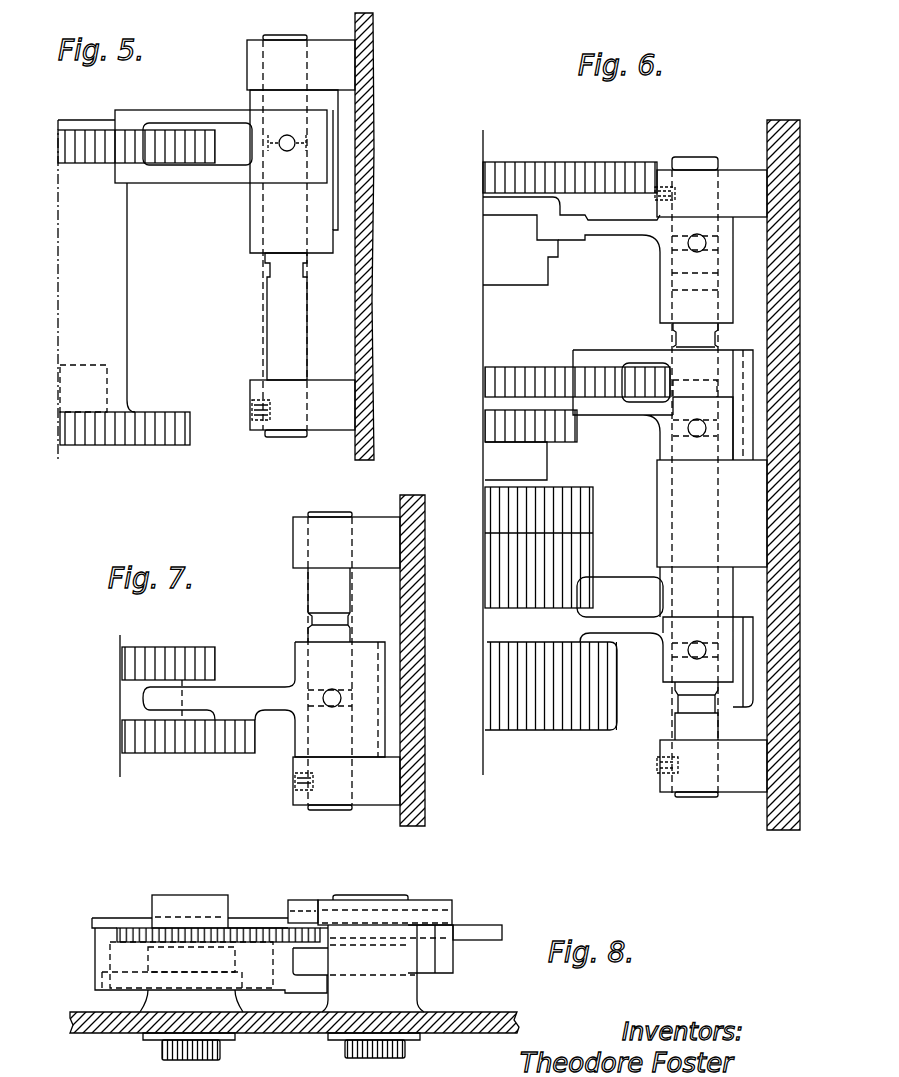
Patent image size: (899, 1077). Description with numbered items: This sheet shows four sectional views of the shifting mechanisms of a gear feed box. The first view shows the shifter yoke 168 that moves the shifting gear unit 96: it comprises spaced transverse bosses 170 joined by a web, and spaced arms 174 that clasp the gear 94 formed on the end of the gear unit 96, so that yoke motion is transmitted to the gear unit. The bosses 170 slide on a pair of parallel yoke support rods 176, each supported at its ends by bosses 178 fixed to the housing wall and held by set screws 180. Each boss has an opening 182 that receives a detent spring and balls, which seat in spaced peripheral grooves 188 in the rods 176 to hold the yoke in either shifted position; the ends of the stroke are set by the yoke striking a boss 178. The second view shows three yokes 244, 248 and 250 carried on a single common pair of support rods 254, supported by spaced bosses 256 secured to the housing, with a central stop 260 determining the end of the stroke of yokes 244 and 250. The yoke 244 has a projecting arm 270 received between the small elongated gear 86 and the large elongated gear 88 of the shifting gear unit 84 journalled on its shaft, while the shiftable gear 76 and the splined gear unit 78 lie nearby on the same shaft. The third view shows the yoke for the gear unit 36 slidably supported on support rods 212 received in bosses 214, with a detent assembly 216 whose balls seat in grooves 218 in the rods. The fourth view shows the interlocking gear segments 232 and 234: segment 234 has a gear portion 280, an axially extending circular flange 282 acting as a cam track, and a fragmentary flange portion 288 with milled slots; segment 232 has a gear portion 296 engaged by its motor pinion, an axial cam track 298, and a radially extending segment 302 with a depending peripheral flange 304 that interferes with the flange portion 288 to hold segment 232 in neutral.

In FIG. 7, the gear unit 36 is at (153, 758).
In FIG. 6, the gear 76 is at (592, 160).
In FIG. 6, the gear unit 78 is at (577, 437).
In FIG. 6, the shifting gear unit 84 is at (566, 735).
In FIG. 6, the small diameter elongated gear 86 is at (596, 518).
In FIG. 6, the large diameter elongated gear 88 is at (622, 722).
In FIG. 5, the gear 94 is at (175, 138).
In FIG. 5, the shifting gear unit 96 is at (128, 306).
In FIG. 5, the shifter yoke 168 is at (272, 203).
In FIG. 5, the transverse bosses 170 is at (250, 242).
In FIG. 5, the spaced arms 174 is at (147, 113).
In FIG. 5, the yoke support rods 176 is at (268, 343).
In FIG. 5, the bosses 178 is at (322, 47).
In FIG. 5, the set screws 180 is at (250, 408).
In FIG. 5, the opening 182 is at (283, 152).
In FIG. 5, the peripheral grooves 188 is at (310, 143).
In FIG. 7, the support rods 212 is at (312, 587).
In FIG. 7, the bosses 214 is at (300, 533).
In FIG. 7, the detent assembly 216 is at (320, 705).
In FIG. 7, the grooves 218 is at (312, 620).
In FIG. 8, the gear segment 232 is at (458, 909).
In FIG. 8, the gear segment 234 is at (95, 979).
In FIG. 6, the yoke 244 is at (627, 622).
In FIG. 6, the yoke 248 is at (616, 236).
In FIG. 6, the yoke 250 is at (597, 352).
In FIG. 6, the support rods 254 is at (683, 727).
In FIG. 6, the bosses 256 is at (733, 172).
In FIG. 6, the central stop 260 is at (712, 498).
In FIG. 6, the projecting arm 270 is at (563, 613).
In FIG. 8, the gear portion 280 is at (315, 924).
In FIG. 8, the circular flange 282 is at (95, 950).
In FIG. 8, the fragmentary flange portion 288 is at (108, 918).
In FIG. 8, the gear portion 296 is at (503, 933).
In FIG. 8, the cam track 298 is at (455, 965).
In FIG. 8, the radially extending segment 302 is at (361, 905).
In FIG. 8, the depending peripheral flange 304 is at (322, 915).